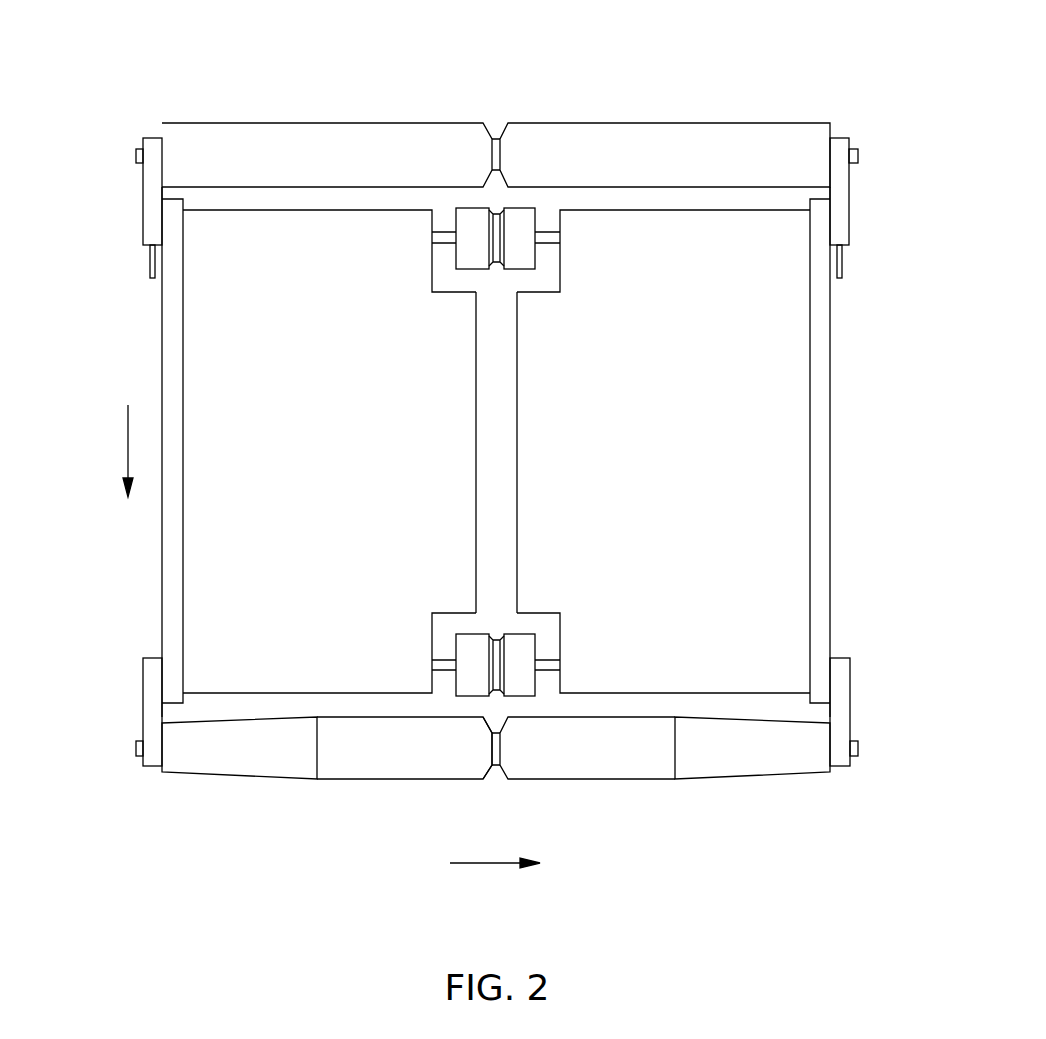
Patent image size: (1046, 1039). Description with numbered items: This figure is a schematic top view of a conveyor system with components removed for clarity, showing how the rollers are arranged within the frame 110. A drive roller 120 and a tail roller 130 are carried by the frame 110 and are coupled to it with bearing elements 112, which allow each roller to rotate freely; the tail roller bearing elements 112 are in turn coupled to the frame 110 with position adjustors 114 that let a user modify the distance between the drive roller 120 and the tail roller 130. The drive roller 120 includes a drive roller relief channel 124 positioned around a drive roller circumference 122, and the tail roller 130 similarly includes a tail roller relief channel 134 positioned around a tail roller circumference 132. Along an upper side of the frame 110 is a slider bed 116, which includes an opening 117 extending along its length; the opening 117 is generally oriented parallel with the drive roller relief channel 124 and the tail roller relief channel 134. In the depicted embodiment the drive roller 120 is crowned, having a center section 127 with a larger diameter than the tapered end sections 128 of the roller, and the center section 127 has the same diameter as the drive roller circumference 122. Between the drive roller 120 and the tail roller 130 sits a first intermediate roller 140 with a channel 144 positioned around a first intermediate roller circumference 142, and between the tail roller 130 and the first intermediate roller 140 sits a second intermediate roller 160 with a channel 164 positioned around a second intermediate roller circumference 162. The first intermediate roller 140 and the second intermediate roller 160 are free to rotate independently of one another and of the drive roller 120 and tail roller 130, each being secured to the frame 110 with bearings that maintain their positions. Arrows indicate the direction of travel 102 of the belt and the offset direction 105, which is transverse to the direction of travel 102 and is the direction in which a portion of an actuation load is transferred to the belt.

The direction of travel 102 is at (128, 442).
The offset direction 105 is at (482, 863).
The frame 110 is at (830, 370).
The bearing elements 112 is at (136, 152).
The position adjustors 114 is at (150, 265).
The slider bed 116 is at (652, 456).
The opening 117 is at (517, 551).
The drive roller 120 is at (499, 794).
The drive roller circumference 122 is at (472, 779).
The drive roller relief channel 124 is at (507, 779).
The center section 127 is at (360, 779).
The tapered end sections 128 is at (257, 779).
The tail roller 130 is at (511, 106).
The tail roller circumference 132 is at (570, 123).
The tail roller relief channel 134 is at (488, 123).
The first intermediate roller 140 is at (533, 632).
The first intermediate roller circumference 142 is at (530, 683).
The channel 144 is at (494, 640).
The second intermediate roller 160 is at (539, 274).
The second intermediate roller circumference 162 is at (470, 269).
The channel 164 is at (498, 265).